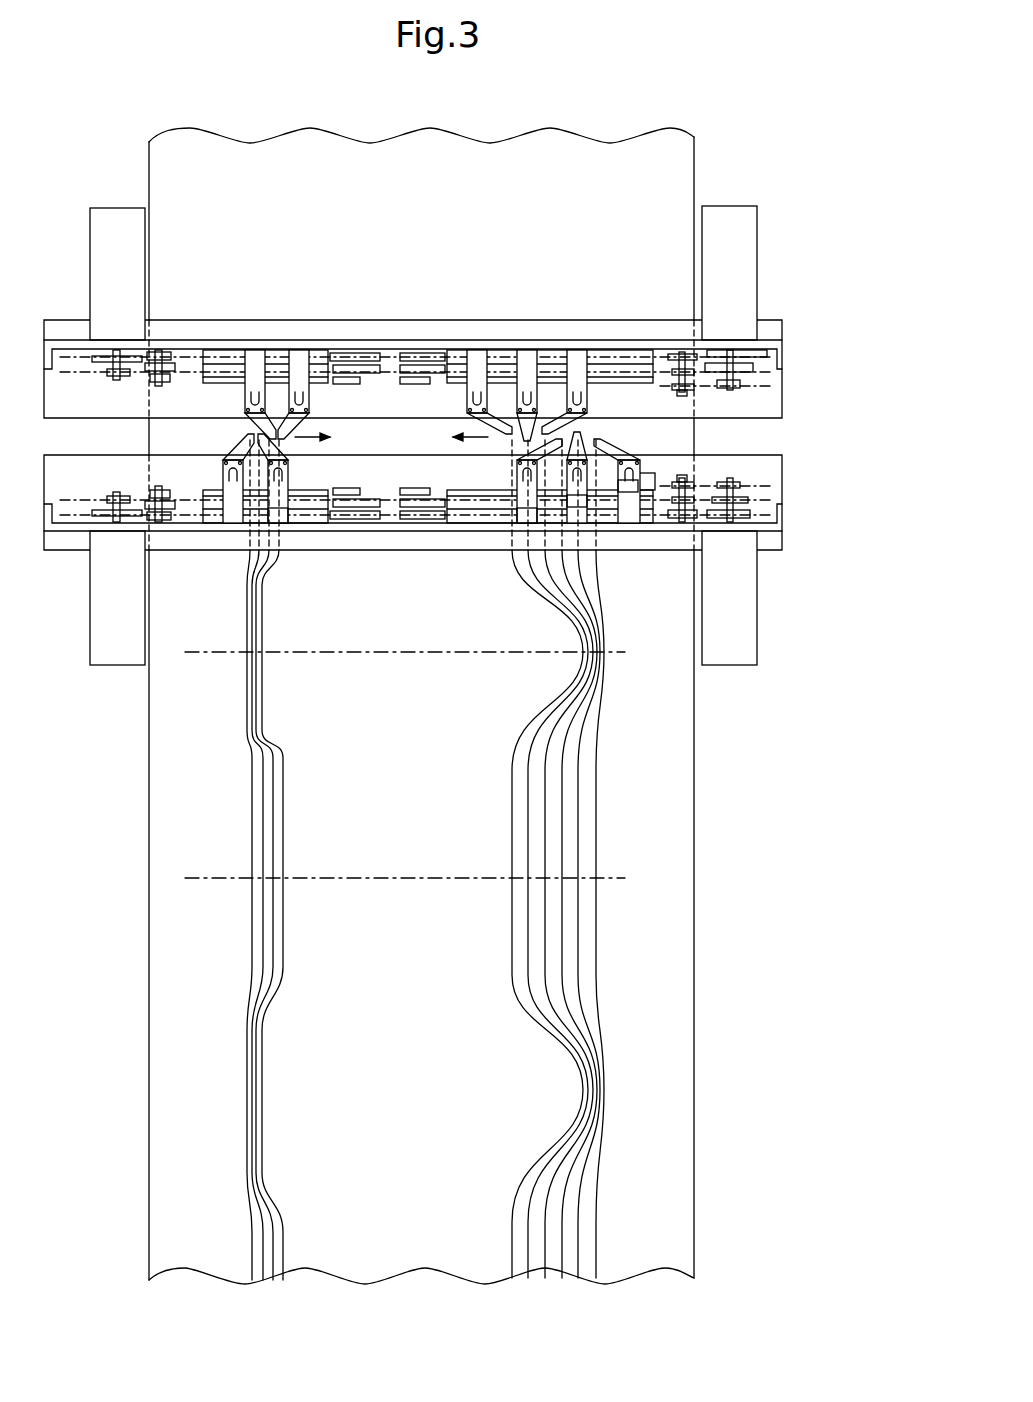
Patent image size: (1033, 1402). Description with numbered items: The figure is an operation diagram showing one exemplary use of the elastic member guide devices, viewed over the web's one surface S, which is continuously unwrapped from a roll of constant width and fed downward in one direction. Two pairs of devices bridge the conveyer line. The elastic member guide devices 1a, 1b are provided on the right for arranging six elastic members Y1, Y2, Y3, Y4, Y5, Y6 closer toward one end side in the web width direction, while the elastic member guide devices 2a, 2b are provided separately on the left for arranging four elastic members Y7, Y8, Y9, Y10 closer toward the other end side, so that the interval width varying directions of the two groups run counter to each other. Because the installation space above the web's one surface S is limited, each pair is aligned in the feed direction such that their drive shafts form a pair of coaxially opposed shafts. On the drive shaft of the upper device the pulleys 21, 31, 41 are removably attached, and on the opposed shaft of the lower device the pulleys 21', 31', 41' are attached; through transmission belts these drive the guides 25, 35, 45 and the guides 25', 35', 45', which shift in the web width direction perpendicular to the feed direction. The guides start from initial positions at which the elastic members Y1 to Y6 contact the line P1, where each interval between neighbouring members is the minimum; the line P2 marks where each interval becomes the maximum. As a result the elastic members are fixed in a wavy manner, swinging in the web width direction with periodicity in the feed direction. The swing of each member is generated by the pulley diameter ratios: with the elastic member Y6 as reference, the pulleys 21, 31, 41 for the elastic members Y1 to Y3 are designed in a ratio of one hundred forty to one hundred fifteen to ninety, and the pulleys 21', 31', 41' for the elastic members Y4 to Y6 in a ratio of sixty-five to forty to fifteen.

The elastic member guide device 1a is at (774, 300).
The elastic member guide device 1b is at (768, 568).
The elastic member guide device 2a is at (213, 300).
The elastic member guide device 2b is at (76, 572).
The pulley 21 is at (770, 367).
The pulley 31 is at (769, 389).
The pulley 41 is at (759, 415).
The pulley 21' is at (773, 533).
The pulley 31' is at (776, 496).
The pulley 41' is at (776, 469).
The guide 25 is at (474, 346).
The guide 35 is at (505, 345).
The guide 45 is at (552, 335).
The guide 25' is at (567, 382).
The guide 35' is at (613, 391).
The guide 45' is at (644, 398).
The line P1 is at (424, 653).
The line P2 is at (424, 879).
The web's one surface S is at (662, 987).
The elastic member Y1 is at (512, 774).
The elastic member Y2 is at (528, 800).
The elastic member Y3 is at (545, 830).
The elastic member Y4 is at (562, 778).
The elastic member Y5 is at (578, 802).
The elastic member Y6 is at (596, 835).
The elastic member Y7 is at (248, 763).
The elastic member Y8 is at (258, 795).
The elastic member Y9 is at (275, 783).
The elastic member Y10 is at (285, 808).